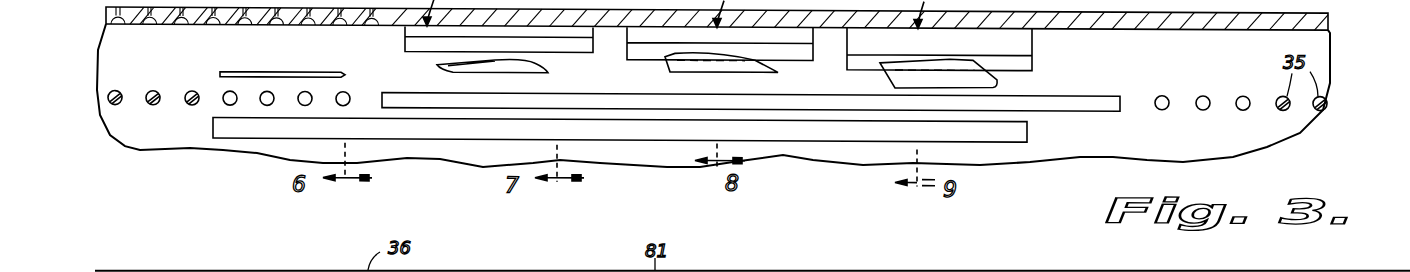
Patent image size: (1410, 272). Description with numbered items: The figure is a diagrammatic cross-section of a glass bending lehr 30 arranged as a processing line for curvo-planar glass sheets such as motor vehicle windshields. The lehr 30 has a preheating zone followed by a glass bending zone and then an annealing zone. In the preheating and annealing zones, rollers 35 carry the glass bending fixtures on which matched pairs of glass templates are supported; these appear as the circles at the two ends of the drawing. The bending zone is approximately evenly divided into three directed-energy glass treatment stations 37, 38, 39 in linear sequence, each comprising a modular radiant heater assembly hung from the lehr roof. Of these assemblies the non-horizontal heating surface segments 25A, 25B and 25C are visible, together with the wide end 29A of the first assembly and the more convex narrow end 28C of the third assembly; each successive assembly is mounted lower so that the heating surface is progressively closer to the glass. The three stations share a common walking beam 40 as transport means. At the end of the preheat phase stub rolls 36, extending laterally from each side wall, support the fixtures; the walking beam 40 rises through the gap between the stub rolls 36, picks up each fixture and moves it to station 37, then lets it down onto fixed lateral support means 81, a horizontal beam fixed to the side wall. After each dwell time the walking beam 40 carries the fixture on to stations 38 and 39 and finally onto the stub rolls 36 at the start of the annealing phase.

The non-horizontal heating surface segment 25A is at (405, 42).
The non-horizontal heating surface segment 25B is at (792, 52).
The heating surface segment 25C is at (955, 62).
The wide end 29A is at (542, 52).
The narrow end 28C is at (1018, 68).
The rollers 35 is at (190, 92).
The stub rolls 36 is at (230, 107).
The walking beam 40 is at (1027, 129).
The fixed lateral support means 81 is at (883, 103).
The first glass treatment station 37 is at (520, 270).
The second glass treatment station 38 is at (752, 270).
The third glass treatment station 39 is at (985, 270).
The glass bending lehr 30 is at (1065, 270).